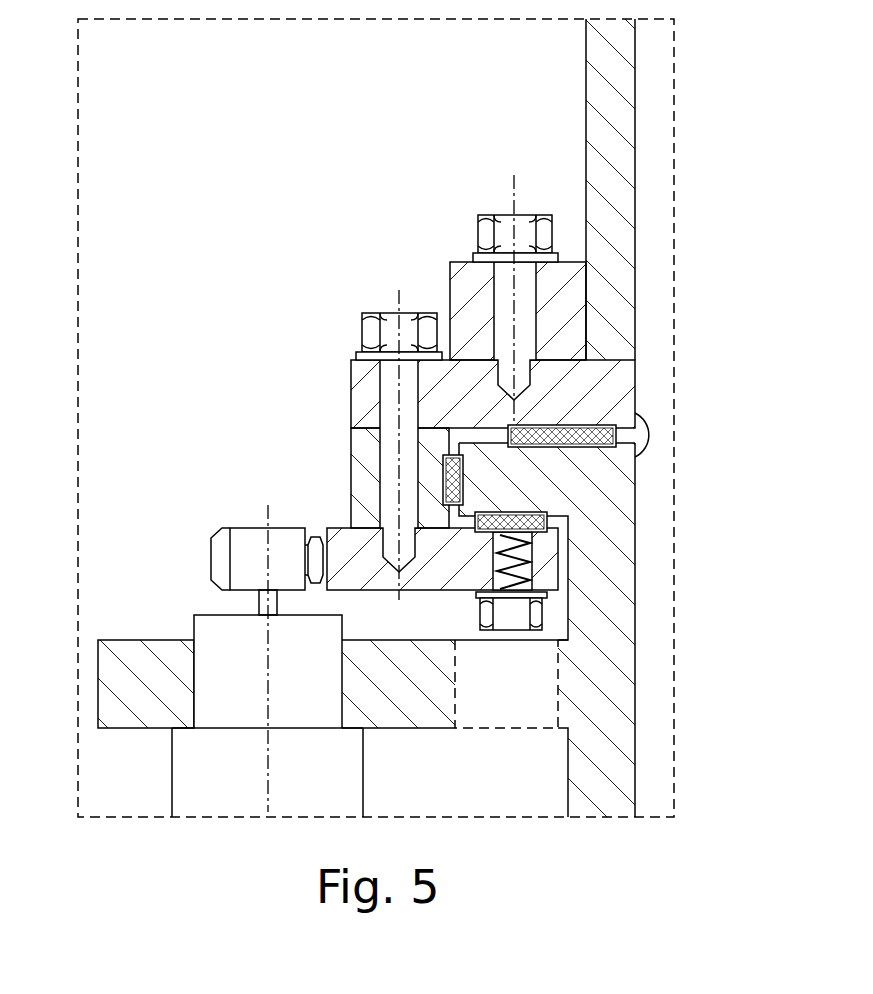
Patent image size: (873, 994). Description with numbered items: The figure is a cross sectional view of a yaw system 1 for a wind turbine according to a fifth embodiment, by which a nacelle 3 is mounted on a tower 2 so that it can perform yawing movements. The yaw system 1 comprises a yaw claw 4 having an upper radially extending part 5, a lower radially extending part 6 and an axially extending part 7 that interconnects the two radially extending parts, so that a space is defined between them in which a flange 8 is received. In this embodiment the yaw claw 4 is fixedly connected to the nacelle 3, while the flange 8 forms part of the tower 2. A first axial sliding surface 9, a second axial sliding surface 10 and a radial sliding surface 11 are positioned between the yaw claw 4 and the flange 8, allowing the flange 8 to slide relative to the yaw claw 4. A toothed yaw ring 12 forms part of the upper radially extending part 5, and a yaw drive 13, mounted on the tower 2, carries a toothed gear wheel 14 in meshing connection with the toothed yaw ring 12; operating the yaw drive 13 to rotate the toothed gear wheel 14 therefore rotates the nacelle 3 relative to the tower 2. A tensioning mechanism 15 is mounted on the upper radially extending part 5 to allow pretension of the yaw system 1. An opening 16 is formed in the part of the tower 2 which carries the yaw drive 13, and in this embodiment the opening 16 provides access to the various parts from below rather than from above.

The yaw system 1 is at (757, 426).
The tower 2 is at (615, 758).
The nacelle 3 is at (617, 112).
The yaw claw 4 is at (338, 408).
The upper radially extending part 5 is at (465, 373).
The lower radially extending part 6 is at (455, 563).
The axially extending part 7 is at (365, 480).
The flange 8 is at (548, 462).
The first axial sliding surface 9 is at (577, 433).
The second axial sliding surface 10 is at (510, 523).
The radial sliding surface 11 is at (455, 483).
The toothed yaw ring 12 is at (363, 560).
The yaw drive 13 is at (225, 763).
The toothed gear wheel 14 is at (245, 555).
The tensioning mechanism 15 is at (510, 612).
The opening 16 is at (497, 692).